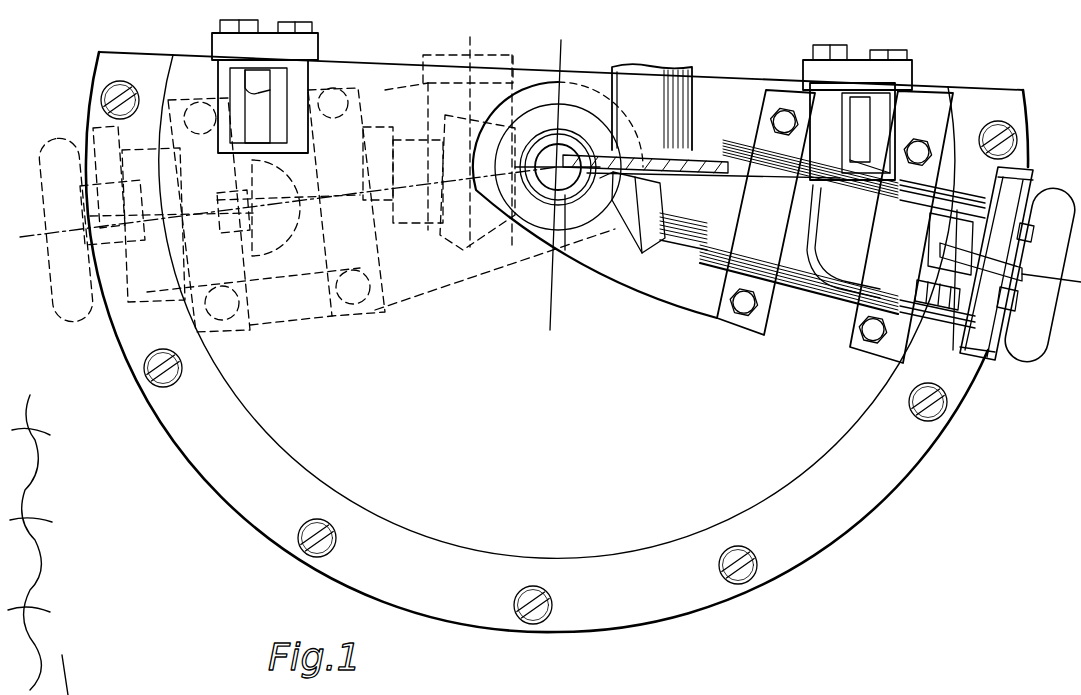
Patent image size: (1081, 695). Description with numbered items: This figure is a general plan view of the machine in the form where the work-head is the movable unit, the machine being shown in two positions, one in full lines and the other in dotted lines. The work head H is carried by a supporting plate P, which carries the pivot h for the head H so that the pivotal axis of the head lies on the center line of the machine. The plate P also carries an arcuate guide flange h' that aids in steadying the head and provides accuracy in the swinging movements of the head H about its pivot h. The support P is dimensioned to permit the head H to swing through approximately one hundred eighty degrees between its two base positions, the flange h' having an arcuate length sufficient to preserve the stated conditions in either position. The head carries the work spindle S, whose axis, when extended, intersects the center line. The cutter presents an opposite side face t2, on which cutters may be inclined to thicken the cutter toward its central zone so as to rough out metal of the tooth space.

The supporting plate P is at (557, 342).
The work head H is at (821, 226).
The work spindle S is at (602, 200).
The pivot h is at (546, 185).
The arcuate guide flange h' is at (557, 334).
The opposite side face of the cutter t2 is at (692, 152).